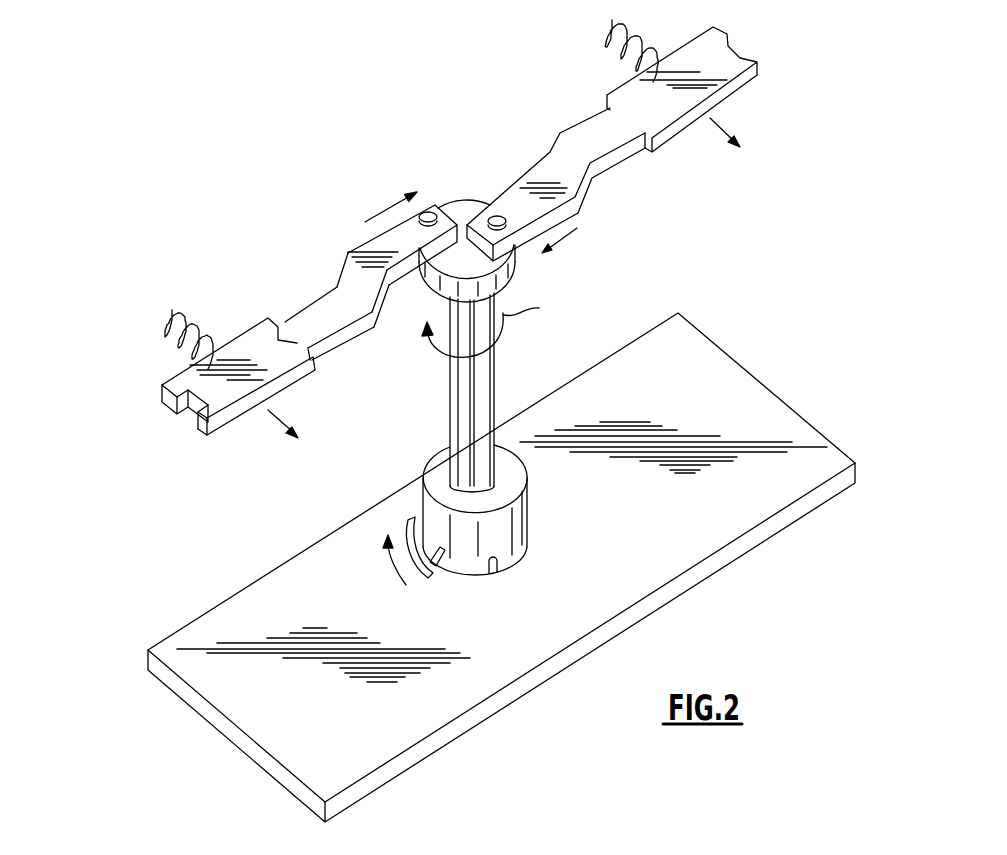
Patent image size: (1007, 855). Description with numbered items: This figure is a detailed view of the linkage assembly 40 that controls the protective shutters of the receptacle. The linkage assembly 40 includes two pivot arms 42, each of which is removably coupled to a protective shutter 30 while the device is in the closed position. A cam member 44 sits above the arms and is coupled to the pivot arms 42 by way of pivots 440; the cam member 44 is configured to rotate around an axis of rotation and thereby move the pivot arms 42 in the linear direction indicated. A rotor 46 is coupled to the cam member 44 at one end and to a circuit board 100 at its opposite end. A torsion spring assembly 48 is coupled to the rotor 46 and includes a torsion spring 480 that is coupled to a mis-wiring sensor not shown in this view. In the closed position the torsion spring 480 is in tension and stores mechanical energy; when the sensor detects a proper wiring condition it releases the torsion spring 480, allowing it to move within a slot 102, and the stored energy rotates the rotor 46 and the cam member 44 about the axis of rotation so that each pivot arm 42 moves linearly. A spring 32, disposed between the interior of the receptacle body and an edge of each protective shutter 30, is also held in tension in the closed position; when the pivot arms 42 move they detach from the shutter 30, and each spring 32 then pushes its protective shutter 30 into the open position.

The protective shutter 30 is at (219, 421).
The spring 32 is at (177, 301).
The linkage assembly 40 is at (574, 319).
The pivot arm 42 is at (332, 311).
The cam member 44 is at (476, 205).
The pivot 440 is at (428, 214).
The rotor 46 is at (491, 402).
The torsion spring assembly 48 is at (503, 532).
The torsion spring 480 is at (436, 570).
The circuit board 100 is at (826, 462).
The slot 102 is at (421, 574).